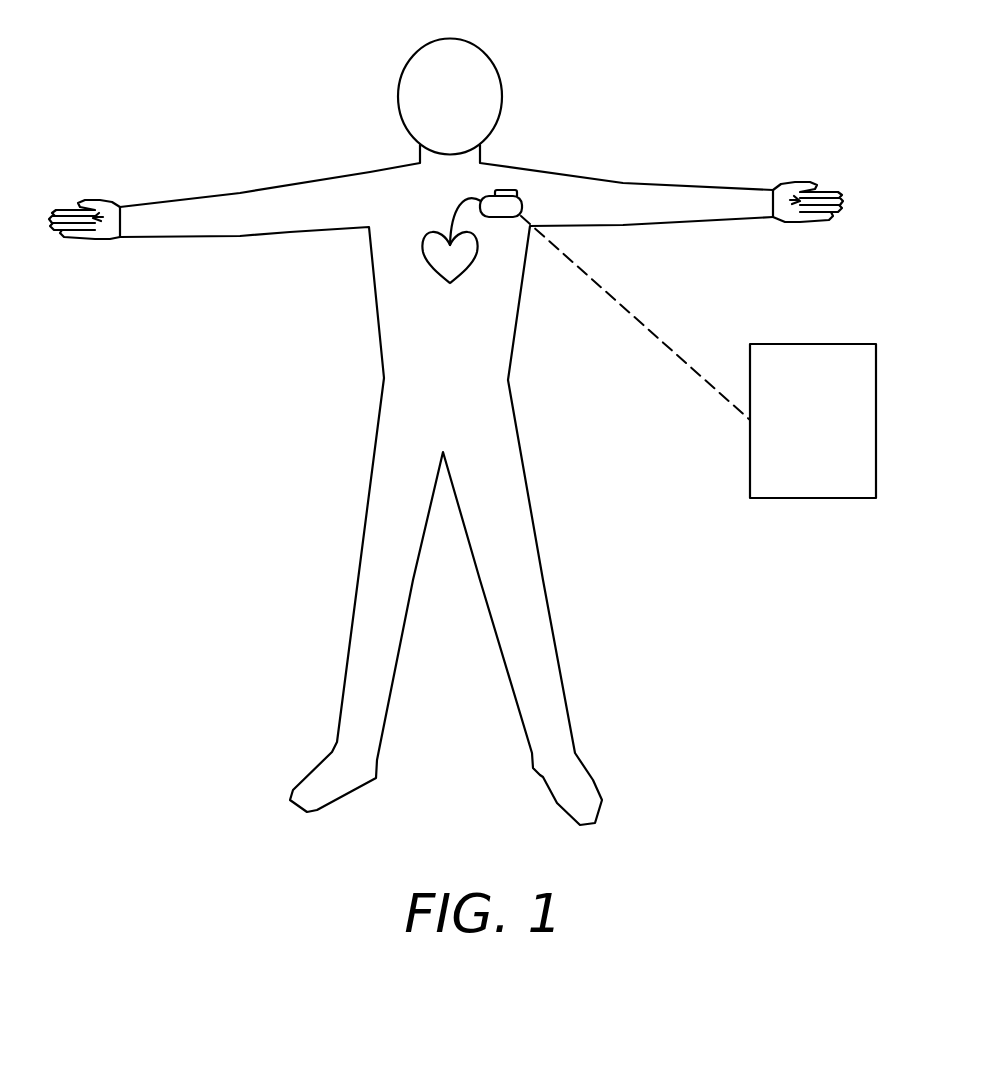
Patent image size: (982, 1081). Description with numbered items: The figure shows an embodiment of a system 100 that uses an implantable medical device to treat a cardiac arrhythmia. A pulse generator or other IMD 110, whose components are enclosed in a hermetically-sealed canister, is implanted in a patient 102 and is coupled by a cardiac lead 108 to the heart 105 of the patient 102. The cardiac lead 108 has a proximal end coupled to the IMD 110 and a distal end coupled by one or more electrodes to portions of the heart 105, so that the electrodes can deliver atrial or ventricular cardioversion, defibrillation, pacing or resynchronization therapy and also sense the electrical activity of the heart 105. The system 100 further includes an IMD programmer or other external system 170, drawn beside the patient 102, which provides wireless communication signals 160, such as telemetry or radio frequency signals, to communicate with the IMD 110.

The system 100 is at (766, 36).
The patient 102 is at (378, 302).
The heart 105 is at (433, 270).
The cardiac lead 108 is at (460, 200).
The IMD 110 is at (505, 191).
The wireless communication signals 160 is at (630, 313).
The external system 170 is at (813, 344).